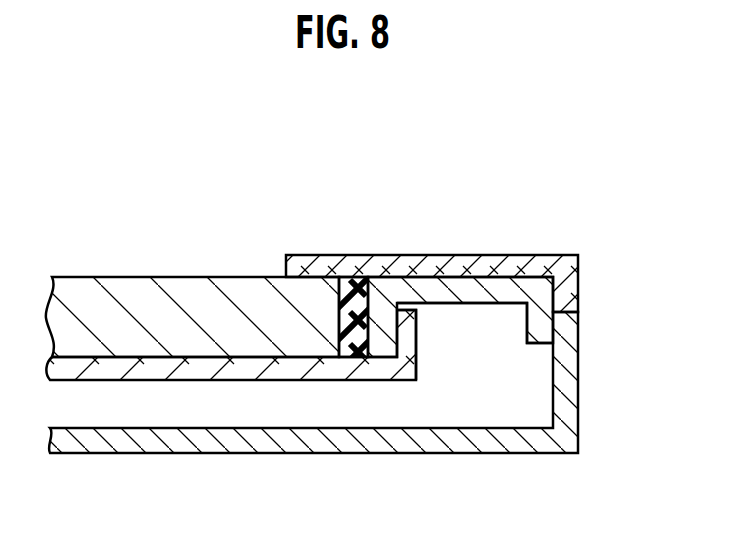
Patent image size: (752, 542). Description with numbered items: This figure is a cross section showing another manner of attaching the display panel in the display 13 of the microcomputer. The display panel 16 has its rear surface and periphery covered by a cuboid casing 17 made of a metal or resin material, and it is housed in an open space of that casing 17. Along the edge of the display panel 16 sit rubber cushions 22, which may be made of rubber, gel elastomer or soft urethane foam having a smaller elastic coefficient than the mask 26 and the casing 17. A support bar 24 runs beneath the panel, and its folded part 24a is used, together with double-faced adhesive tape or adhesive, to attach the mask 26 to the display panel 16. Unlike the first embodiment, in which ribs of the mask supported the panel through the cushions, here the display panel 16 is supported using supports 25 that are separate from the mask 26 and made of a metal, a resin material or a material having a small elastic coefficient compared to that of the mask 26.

The display 13 is at (480, 168).
The display panel 16 is at (127, 292).
The casing 17 is at (580, 415).
The rubber cushion 22 is at (349, 316).
The support bar 24 is at (395, 381).
The folded part 24a is at (424, 346).
The support 25 is at (487, 304).
The mask 26 is at (500, 255).